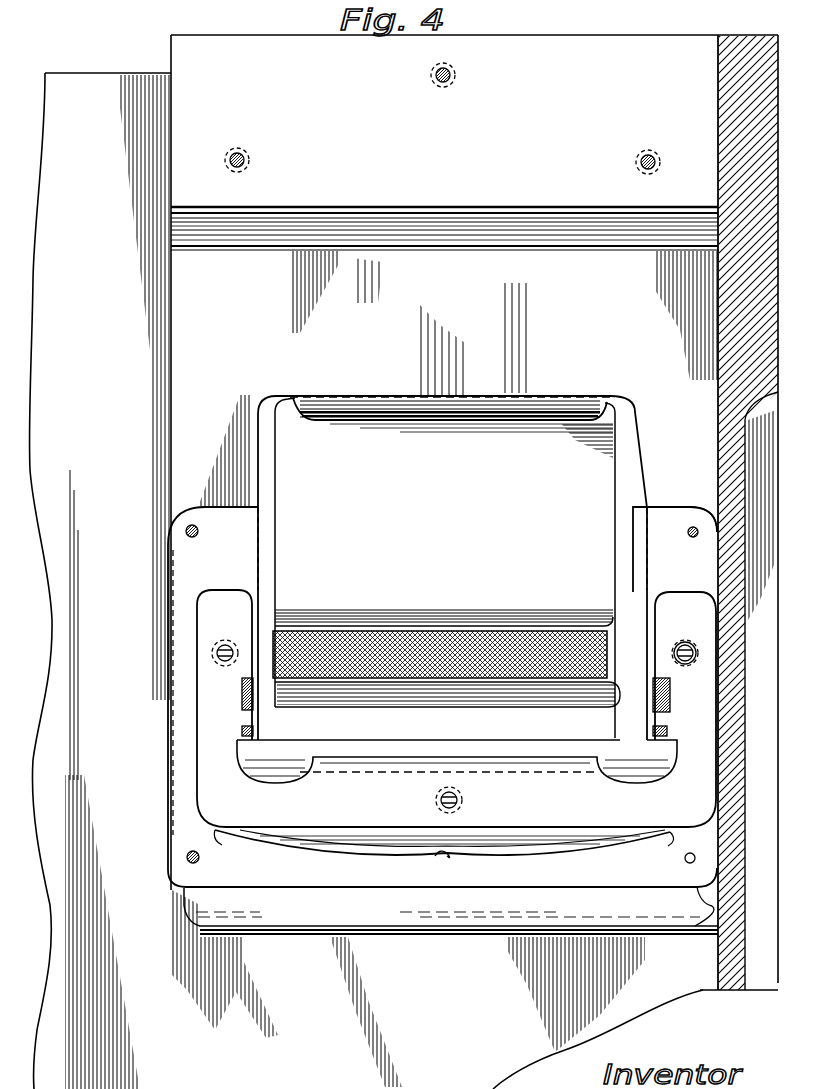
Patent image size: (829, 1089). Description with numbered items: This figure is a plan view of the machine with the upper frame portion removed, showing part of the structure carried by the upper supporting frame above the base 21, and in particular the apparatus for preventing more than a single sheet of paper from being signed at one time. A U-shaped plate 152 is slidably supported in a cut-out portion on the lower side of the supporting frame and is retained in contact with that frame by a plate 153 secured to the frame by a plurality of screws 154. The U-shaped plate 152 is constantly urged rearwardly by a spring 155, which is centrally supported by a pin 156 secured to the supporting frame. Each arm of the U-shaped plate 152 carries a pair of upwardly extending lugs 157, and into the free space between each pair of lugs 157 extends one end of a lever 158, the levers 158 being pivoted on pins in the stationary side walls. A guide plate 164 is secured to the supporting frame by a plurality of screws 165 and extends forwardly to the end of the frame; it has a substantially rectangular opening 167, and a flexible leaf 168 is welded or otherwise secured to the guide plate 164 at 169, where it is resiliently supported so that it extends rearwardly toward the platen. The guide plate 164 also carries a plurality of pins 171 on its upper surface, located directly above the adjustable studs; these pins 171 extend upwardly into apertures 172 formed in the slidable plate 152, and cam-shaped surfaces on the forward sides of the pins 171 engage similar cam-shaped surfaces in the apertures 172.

The base 21 is at (366, 562).
The U-shaped plate 152 is at (668, 596).
The plate 153 is at (182, 797).
The screws 154 is at (184, 535).
The spring 155 is at (558, 852).
The pin 156 is at (437, 857).
The lugs 157 is at (245, 726).
The levers 158 is at (252, 702).
The guide plate 164 is at (444, 357).
The screws 165 is at (249, 162).
The rectangular opening 167 is at (642, 468).
The flexible leaf 168 is at (446, 604).
The welded joint 169 is at (353, 413).
The pins 171 is at (681, 647).
The apertures 172 is at (677, 657).